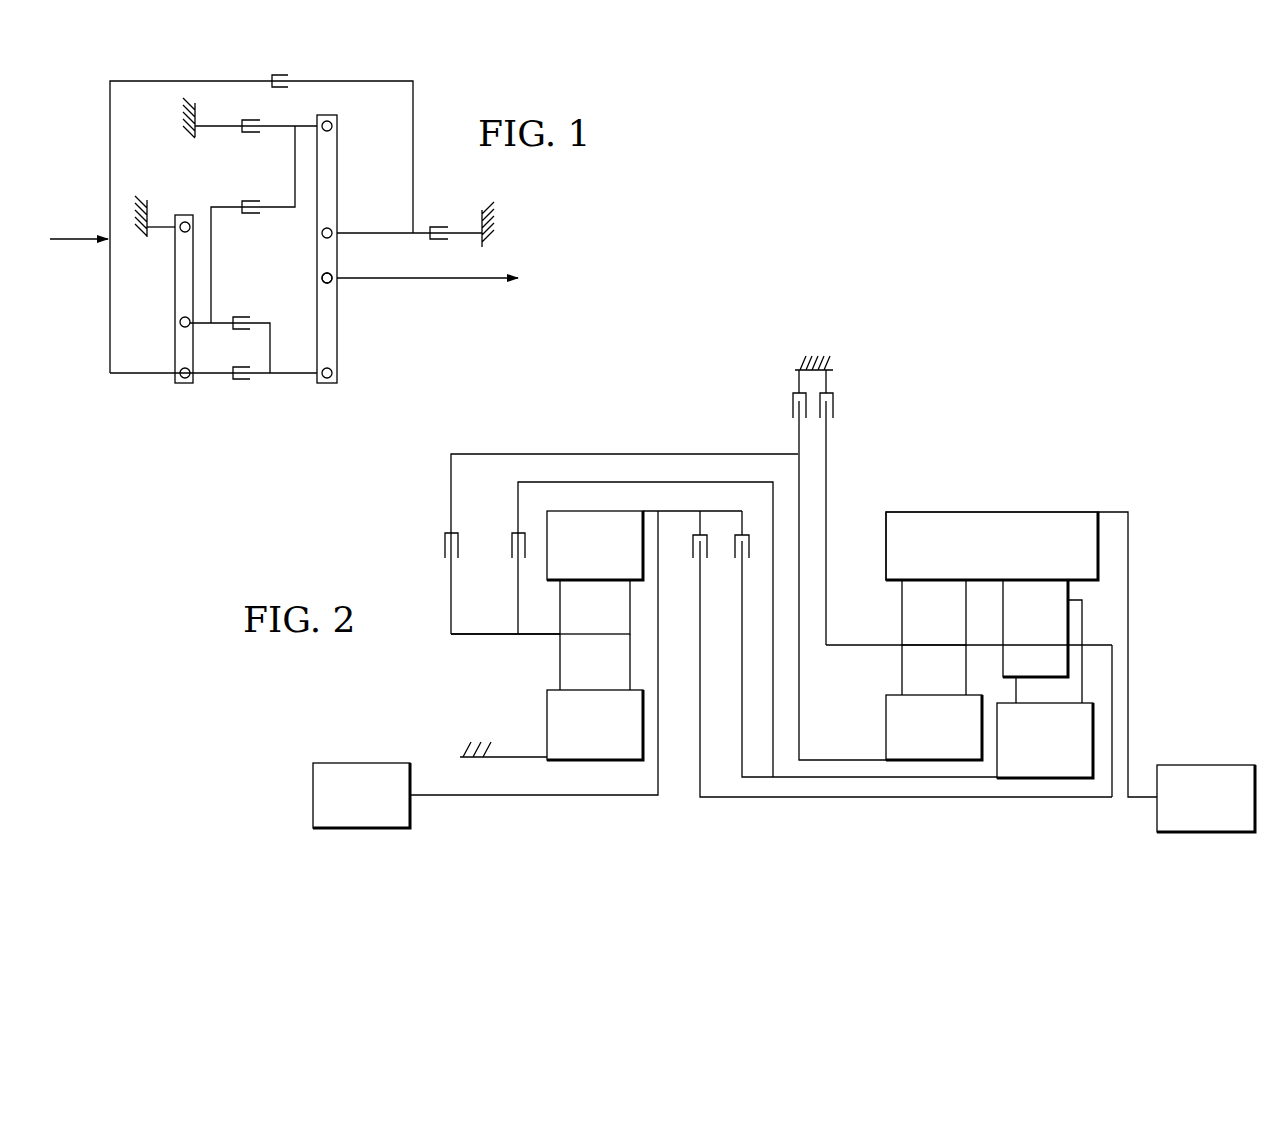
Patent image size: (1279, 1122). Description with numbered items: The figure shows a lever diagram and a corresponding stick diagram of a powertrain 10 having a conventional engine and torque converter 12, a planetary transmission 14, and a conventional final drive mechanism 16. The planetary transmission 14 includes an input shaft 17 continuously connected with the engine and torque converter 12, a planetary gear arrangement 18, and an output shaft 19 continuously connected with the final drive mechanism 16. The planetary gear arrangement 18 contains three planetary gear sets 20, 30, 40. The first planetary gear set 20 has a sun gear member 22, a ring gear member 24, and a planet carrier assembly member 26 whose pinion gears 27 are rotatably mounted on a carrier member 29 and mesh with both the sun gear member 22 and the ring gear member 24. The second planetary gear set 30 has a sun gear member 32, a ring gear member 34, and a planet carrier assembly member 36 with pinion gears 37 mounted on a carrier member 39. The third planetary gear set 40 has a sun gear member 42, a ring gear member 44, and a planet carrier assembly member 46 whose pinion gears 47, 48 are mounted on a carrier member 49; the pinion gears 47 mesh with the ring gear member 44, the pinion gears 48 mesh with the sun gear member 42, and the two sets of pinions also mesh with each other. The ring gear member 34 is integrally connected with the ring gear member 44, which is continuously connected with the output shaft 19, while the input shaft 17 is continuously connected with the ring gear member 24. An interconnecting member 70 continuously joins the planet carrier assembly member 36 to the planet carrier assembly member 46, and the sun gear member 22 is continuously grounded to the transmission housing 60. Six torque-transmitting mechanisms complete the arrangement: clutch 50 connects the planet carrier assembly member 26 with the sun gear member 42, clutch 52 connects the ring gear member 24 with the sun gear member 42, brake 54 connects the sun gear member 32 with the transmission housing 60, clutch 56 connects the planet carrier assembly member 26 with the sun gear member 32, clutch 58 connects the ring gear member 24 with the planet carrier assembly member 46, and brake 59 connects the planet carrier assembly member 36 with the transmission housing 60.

In FIG. 2, the powertrain 10 is at (534, 414).
In FIG. 2, the engine and torque converter 12 is at (363, 762).
In FIG. 2, the planetary transmission 14 is at (1011, 418).
In FIG. 2, the final drive mechanism 16 is at (1202, 764).
In FIG. 1, the input shaft 17 is at (100, 238).
In FIG. 2, the input shaft 17 is at (445, 796).
In FIG. 2, the planetary gear arrangement 18 is at (936, 390).
In FIG. 1, the output shaft 19 is at (402, 280).
In FIG. 2, the output shaft 19 is at (1138, 799).
In FIG. 2, the first planetary gear set 20 is at (570, 676).
In FIG. 1, the sun gear member 22 is at (182, 233).
In FIG. 2, the sun gear member 22 is at (583, 750).
In FIG. 1, the ring gear member 24 is at (183, 378).
In FIG. 2, the ring gear member 24 is at (583, 569).
In FIG. 1, the planet carrier assembly member 26 is at (183, 318).
In FIG. 2, the planet carrier assembly member 26 is at (550, 645).
In FIG. 2, the pinion gears 27 is at (583, 617).
In FIG. 2, the carrier member 29 is at (572, 637).
In FIG. 2, the second planetary gear set 30 is at (932, 769).
In FIG. 1, the sun gear member 32 is at (324, 120).
In FIG. 2, the sun gear member 32 is at (923, 754).
In FIG. 1, the ring gear member 34 is at (331, 290).
In FIG. 2, the ring gear member 34 is at (923, 565).
In FIG. 1, the planet carrier assembly member 36 is at (330, 227).
In FIG. 2, the planet carrier assembly member 36 is at (888, 657).
In FIG. 2, the pinion gears 37 is at (928, 628).
In FIG. 2, the carrier member 39 is at (878, 645).
In FIG. 2, the third planetary gear set 40 is at (1045, 773).
In FIG. 1, the sun gear member 42 is at (324, 380).
In FIG. 2, the sun gear member 42 is at (1033, 763).
In FIG. 1, the ring gear member 44 is at (327, 278).
In FIG. 2, the ring gear member 44 is at (1035, 565).
In FIG. 2, the planet carrier assembly member 46 is at (1090, 660).
In FIG. 2, the pinion gears 47 is at (1025, 624).
In FIG. 2, the pinion gears 48 is at (1082, 683).
In FIG. 2, the carrier member 49 is at (1100, 645).
In FIG. 1, the clutch 50 is at (251, 334).
In FIG. 2, the clutch 50 is at (511, 562).
In FIG. 1, the clutch 52 is at (256, 387).
In FIG. 2, the clutch 52 is at (738, 562).
In FIG. 1, the brake 54 is at (242, 136).
In FIG. 2, the brake 54 is at (786, 407).
In FIG. 1, the clutch 56 is at (257, 222).
In FIG. 2, the clutch 56 is at (445, 562).
In FIG. 1, the clutch 58 is at (304, 76).
In FIG. 2, the clutch 58 is at (696, 562).
In FIG. 1, the brake 59 is at (446, 247).
In FIG. 2, the brake 59 is at (841, 418).
In FIG. 1, the transmission housing 60 is at (138, 212).
In FIG. 2, the transmission housing 60 is at (463, 751).
In FIG. 2, the interconnecting member 70 is at (990, 645).